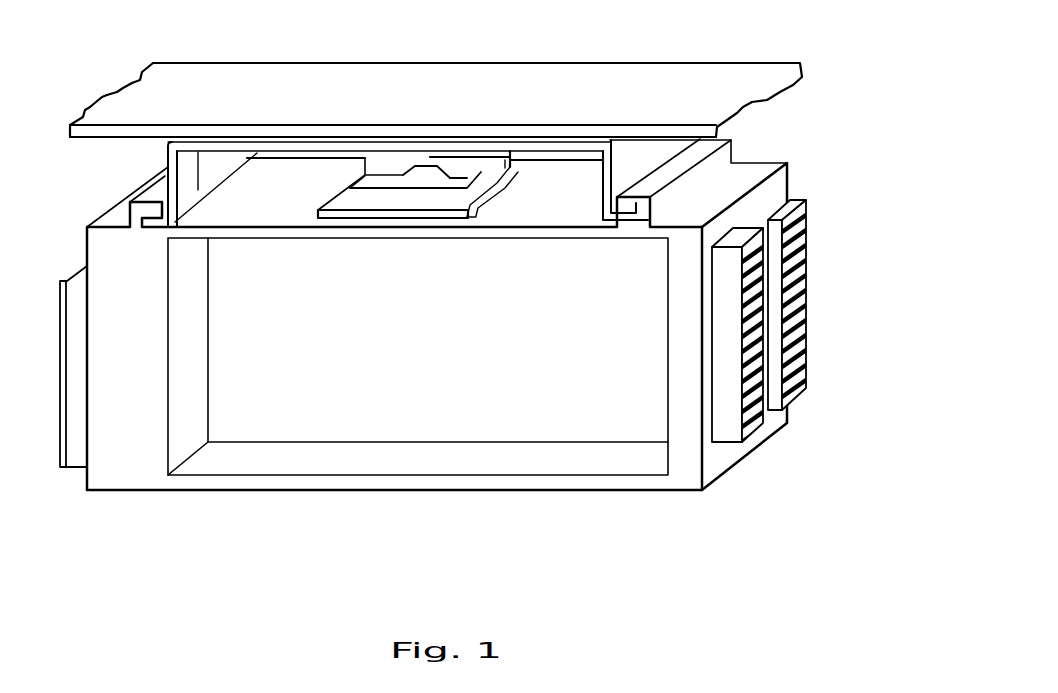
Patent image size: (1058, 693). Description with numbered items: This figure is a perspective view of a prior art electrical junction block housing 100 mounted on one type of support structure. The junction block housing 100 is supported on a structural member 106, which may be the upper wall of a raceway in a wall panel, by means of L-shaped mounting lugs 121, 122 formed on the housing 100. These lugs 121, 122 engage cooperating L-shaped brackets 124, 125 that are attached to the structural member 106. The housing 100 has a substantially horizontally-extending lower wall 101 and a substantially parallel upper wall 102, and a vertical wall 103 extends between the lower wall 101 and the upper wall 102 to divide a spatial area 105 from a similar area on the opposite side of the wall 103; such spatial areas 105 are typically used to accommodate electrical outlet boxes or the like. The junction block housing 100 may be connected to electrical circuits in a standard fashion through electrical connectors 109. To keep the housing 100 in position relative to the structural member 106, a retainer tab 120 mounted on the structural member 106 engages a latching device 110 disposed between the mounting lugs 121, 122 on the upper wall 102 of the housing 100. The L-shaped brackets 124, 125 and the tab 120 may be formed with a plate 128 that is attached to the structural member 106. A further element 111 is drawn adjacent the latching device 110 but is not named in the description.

The electrical junction block housing 100 is at (815, 162).
The lower wall 101 is at (515, 490).
The upper wall 102 is at (282, 218).
The vertical wall 103 is at (418, 356).
The spatial area 105 is at (293, 425).
The structural member 106 is at (484, 88).
The electrical connectors 109 is at (806, 315).
The latching device 110 is at (313, 186).
The spring contact 111 is at (498, 187).
The retainer tab 120 is at (397, 162).
The L-shaped mounting lug 121 is at (152, 184).
The L-shaped mounting lug 122 is at (727, 156).
The L-shaped bracket 124 is at (246, 160).
The L-shaped bracket 125 is at (608, 168).
The plate 128 is at (198, 190).